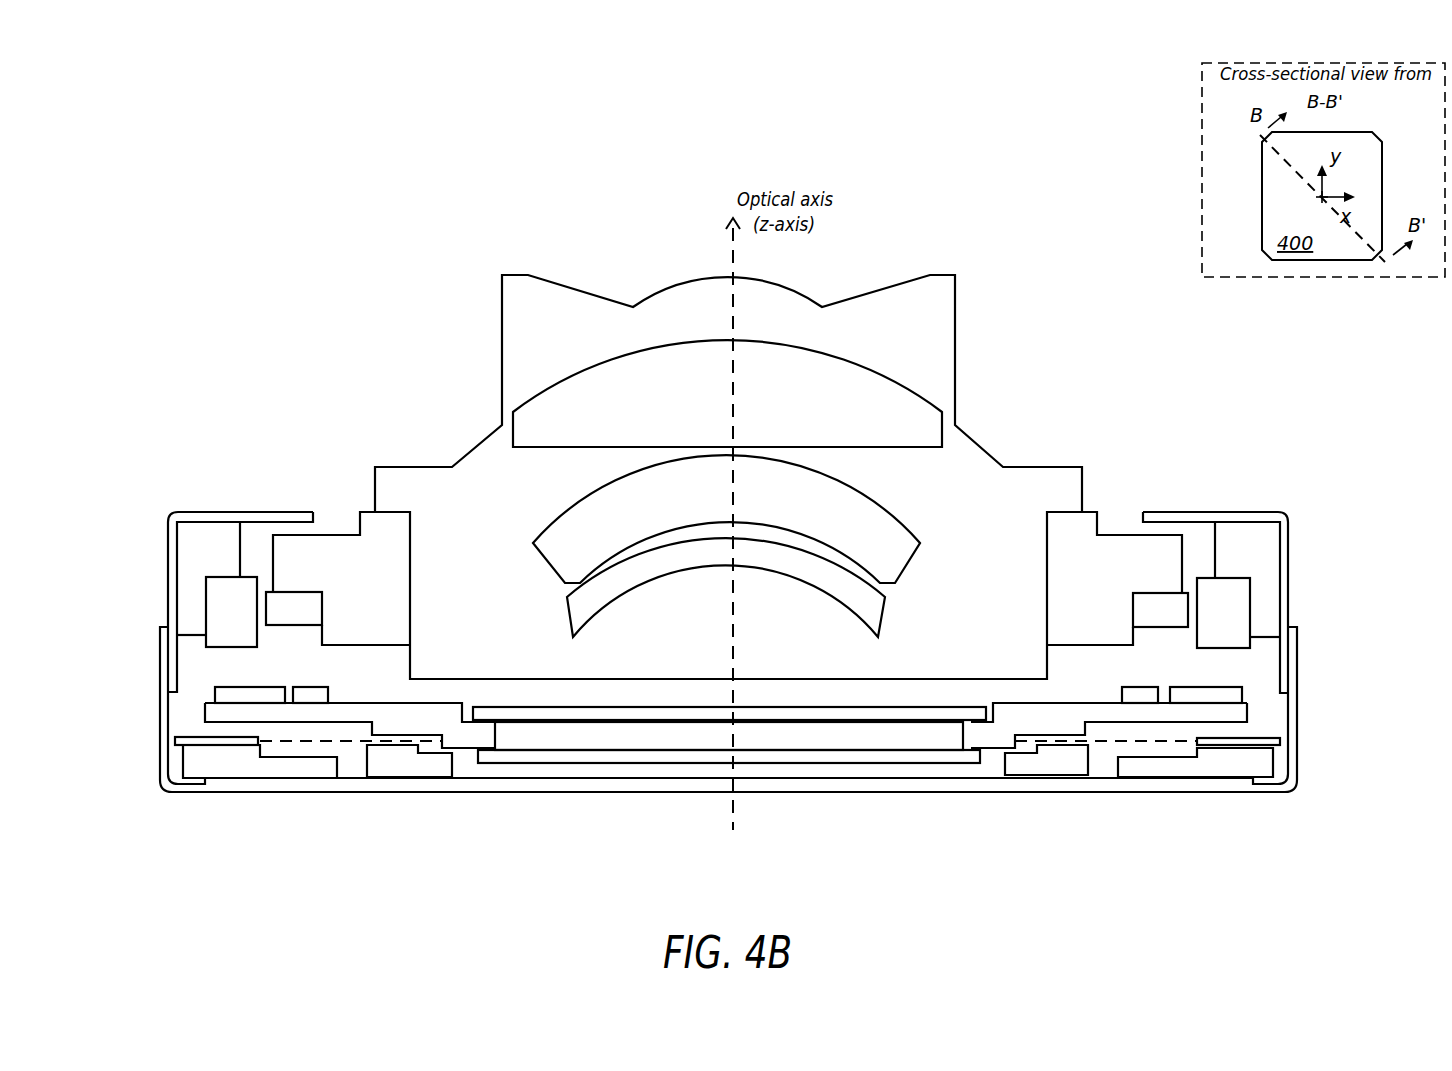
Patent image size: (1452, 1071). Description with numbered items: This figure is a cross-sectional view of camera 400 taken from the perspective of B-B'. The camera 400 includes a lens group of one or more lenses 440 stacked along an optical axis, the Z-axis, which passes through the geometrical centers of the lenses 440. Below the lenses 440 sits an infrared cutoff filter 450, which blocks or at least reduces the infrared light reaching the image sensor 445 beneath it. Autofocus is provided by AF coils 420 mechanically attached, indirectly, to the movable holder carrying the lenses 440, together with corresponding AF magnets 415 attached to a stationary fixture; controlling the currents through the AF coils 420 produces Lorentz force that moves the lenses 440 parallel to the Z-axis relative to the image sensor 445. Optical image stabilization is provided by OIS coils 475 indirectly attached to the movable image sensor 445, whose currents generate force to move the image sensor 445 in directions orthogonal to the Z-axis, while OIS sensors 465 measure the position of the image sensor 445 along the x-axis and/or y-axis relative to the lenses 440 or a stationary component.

The camera 400 is at (278, 189).
The AF magnet 415 is at (228, 592).
The AF coil 420 is at (297, 600).
The lenses 440 is at (563, 603).
The image sensor 445 is at (598, 757).
The infrared cutoff filter 450 is at (898, 718).
The OIS sensor 465 is at (308, 695).
The OIS coil 475 is at (217, 695).